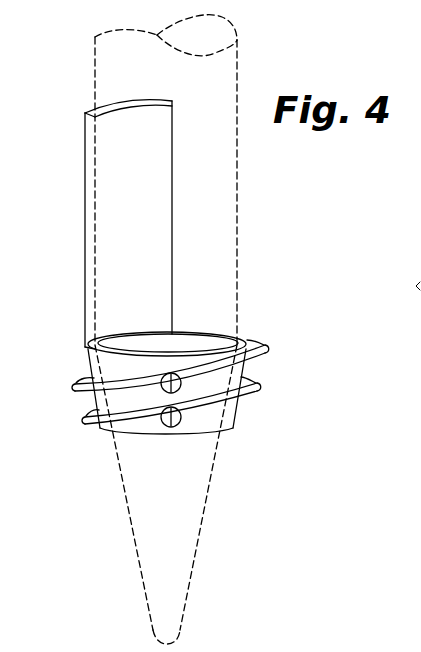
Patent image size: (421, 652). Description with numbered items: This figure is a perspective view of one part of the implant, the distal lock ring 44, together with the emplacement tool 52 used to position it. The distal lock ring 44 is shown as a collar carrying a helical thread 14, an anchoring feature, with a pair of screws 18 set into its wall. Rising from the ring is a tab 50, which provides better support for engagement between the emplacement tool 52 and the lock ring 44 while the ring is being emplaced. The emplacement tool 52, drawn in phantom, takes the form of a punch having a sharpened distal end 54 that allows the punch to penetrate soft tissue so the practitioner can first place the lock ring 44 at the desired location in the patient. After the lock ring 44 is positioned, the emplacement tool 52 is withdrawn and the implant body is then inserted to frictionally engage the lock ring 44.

The threads 14 is at (260, 380).
The screw 18 is at (171, 428).
The distal lock ring 44 is at (283, 383).
The tab 50 is at (112, 183).
The emplacement tool 52 is at (237, 210).
The sharpened distal end 54 is at (203, 512).